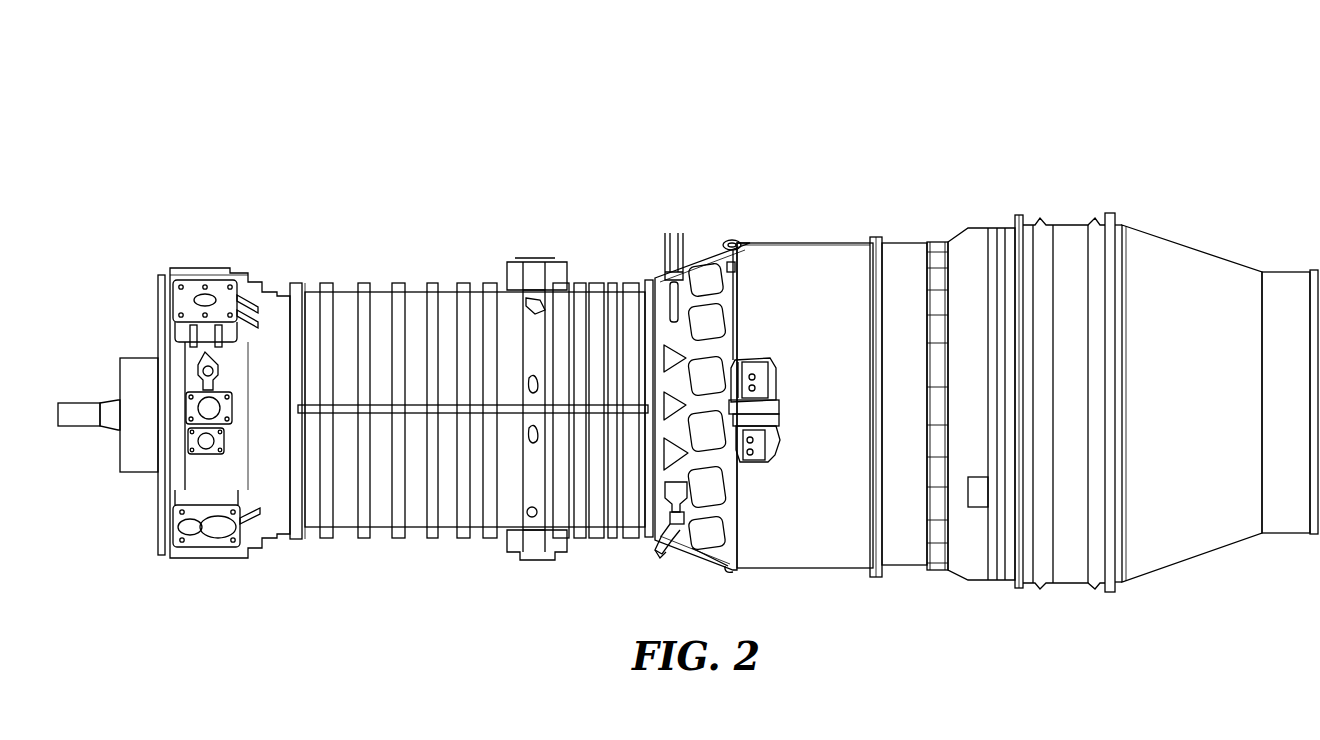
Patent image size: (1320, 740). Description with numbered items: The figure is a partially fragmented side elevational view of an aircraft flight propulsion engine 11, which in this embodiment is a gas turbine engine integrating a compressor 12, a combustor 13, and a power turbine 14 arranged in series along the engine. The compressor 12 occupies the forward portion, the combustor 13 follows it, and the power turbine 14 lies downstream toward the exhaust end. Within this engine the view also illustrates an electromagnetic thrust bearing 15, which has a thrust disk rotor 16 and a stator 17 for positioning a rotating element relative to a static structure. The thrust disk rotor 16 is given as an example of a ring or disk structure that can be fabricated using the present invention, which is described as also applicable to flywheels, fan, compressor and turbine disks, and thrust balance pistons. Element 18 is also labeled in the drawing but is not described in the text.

The aircraft flight propulsion engine 11 is at (1200, 147).
The compressor 12 is at (385, 540).
The combustor 13 is at (775, 380).
The power turbine 14 is at (1075, 225).
The electromagnetic thrust bearing 15 is at (778, 400).
The thrust disk rotor 16 is at (735, 357).
The stator 17 is at (768, 378).
The sensor lower housing 18 is at (778, 420).